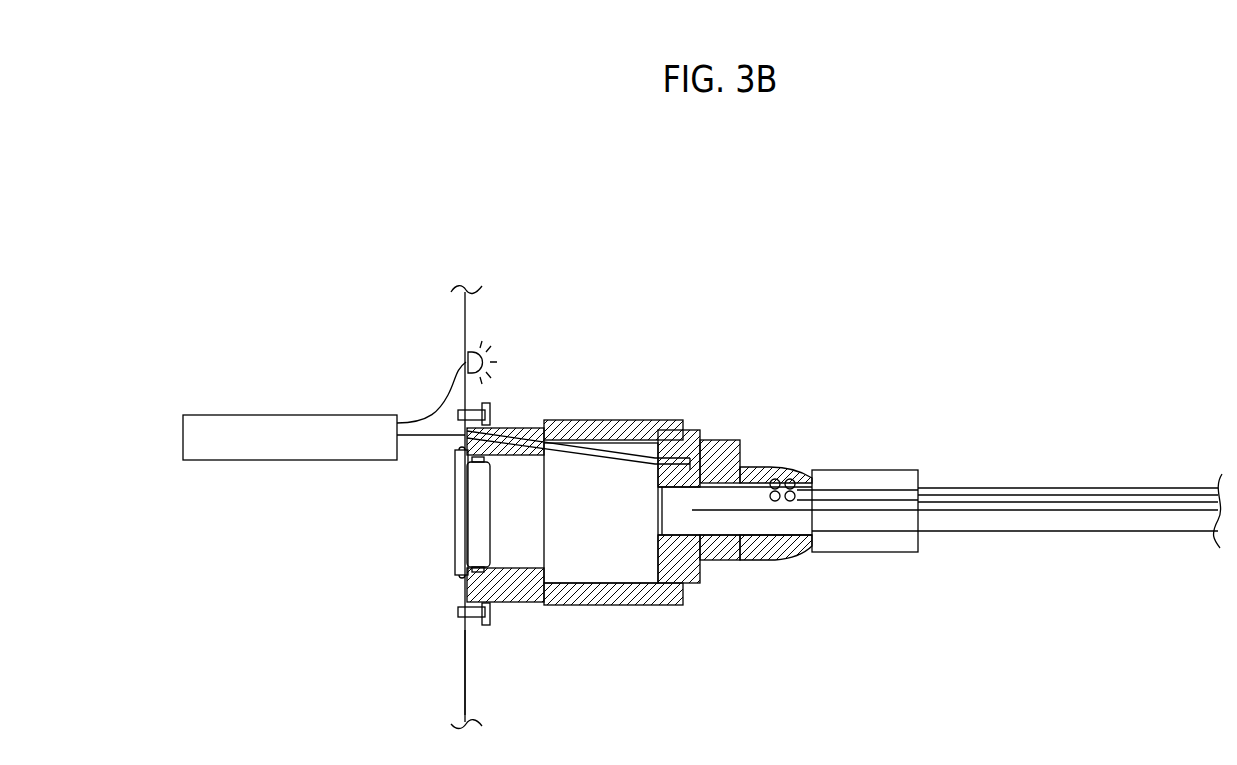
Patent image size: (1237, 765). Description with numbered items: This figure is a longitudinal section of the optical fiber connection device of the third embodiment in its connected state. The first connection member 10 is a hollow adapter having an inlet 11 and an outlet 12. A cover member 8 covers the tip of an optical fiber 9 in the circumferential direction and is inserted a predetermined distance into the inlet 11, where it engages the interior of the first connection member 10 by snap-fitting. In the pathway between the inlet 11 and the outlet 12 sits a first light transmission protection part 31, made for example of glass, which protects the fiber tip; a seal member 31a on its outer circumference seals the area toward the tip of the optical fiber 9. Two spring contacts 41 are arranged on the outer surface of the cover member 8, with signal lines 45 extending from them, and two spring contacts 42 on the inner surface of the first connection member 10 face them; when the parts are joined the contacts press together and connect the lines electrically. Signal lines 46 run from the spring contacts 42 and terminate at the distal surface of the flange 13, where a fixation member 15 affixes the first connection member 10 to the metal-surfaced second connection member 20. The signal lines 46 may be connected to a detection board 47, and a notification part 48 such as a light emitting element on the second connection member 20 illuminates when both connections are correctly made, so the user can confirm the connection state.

The first connection member 10 is at (810, 263).
The second connection member 20 is at (472, 320).
The flange 13 is at (473, 625).
The notification part 48 is at (468, 356).
The fixation member 15 is at (488, 408).
The detection board 47 is at (280, 461).
The outlet 12 is at (455, 505).
The seal member 31a is at (508, 572).
The first light transmission protection part 31 is at (482, 523).
The signal lines 46 is at (605, 447).
The spring contacts 41 is at (793, 512).
The cover member 8 is at (792, 528).
The spring contacts 42 is at (790, 480).
The inlet 11 is at (815, 470).
The optical fiber 9 is at (1053, 532).
The signal lines 45 is at (1120, 490).